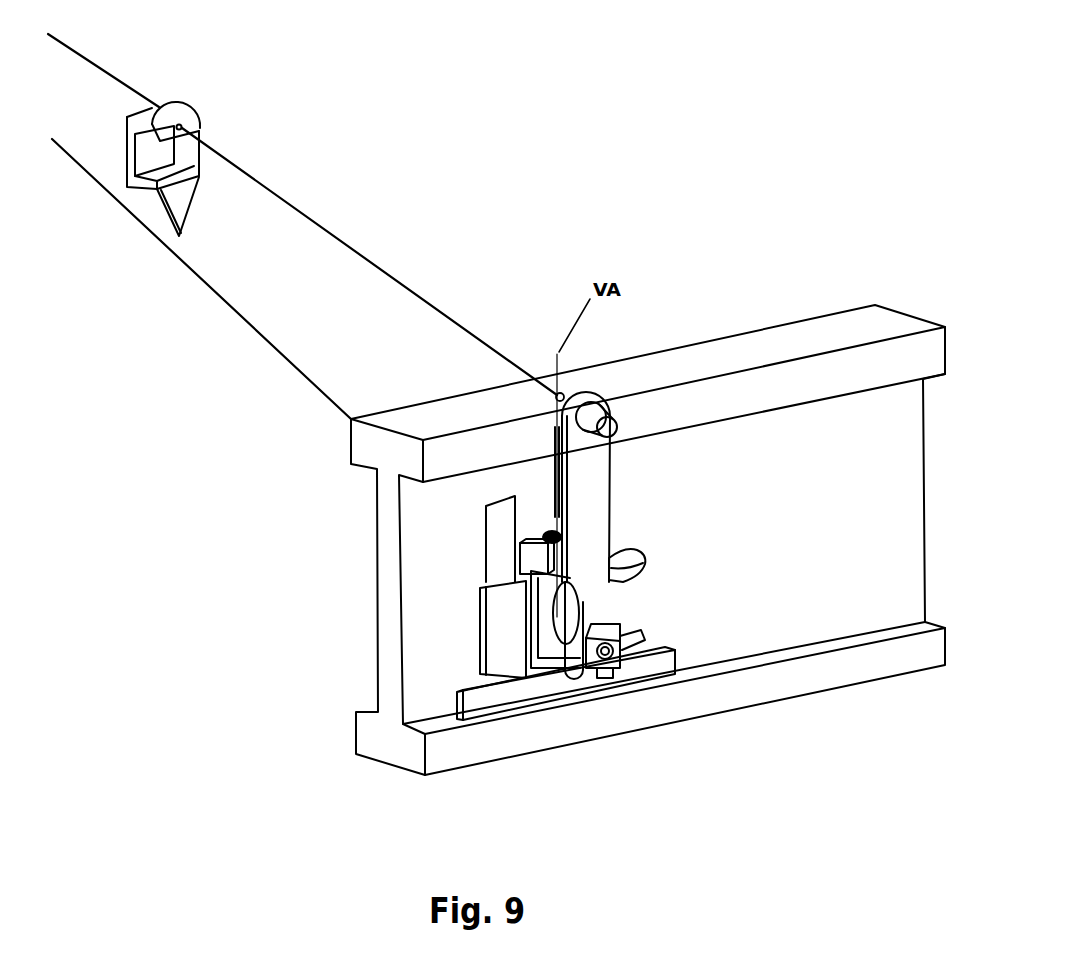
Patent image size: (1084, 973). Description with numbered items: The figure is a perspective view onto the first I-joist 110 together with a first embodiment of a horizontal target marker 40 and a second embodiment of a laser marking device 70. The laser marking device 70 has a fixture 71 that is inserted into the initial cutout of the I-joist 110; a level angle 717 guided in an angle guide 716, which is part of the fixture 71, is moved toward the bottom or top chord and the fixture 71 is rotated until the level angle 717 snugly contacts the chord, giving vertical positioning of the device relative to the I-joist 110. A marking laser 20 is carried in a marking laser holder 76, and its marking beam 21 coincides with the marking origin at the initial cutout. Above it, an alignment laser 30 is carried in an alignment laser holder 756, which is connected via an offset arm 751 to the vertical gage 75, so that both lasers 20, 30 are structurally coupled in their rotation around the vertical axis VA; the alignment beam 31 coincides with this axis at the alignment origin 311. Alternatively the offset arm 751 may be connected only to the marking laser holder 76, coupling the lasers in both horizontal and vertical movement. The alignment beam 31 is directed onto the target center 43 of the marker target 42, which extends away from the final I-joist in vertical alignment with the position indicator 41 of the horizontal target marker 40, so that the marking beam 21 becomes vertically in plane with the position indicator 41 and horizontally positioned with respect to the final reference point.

The I-joist 110 is at (346, 805).
The marking beam 21 is at (300, 373).
The alignment beam 31 is at (503, 355).
The alignment origin 311 is at (551, 393).
The horizontal target marker 40 is at (162, 156).
The position indicator 41 is at (177, 232).
The marker target 42 is at (171, 106).
The target center 43 is at (178, 124).
The alignment laser 30 is at (607, 425).
The alignment laser holder 756 is at (590, 407).
The laser marking device 70 is at (538, 610).
The angle guide 716 is at (493, 622).
The level angle 717 is at (517, 692).
The fixture 71 is at (520, 553).
The offset arm 751 is at (575, 502).
The vertical gage 75 is at (526, 597).
The marking laser 20 is at (608, 660).
The marking laser holder 76 is at (618, 662).